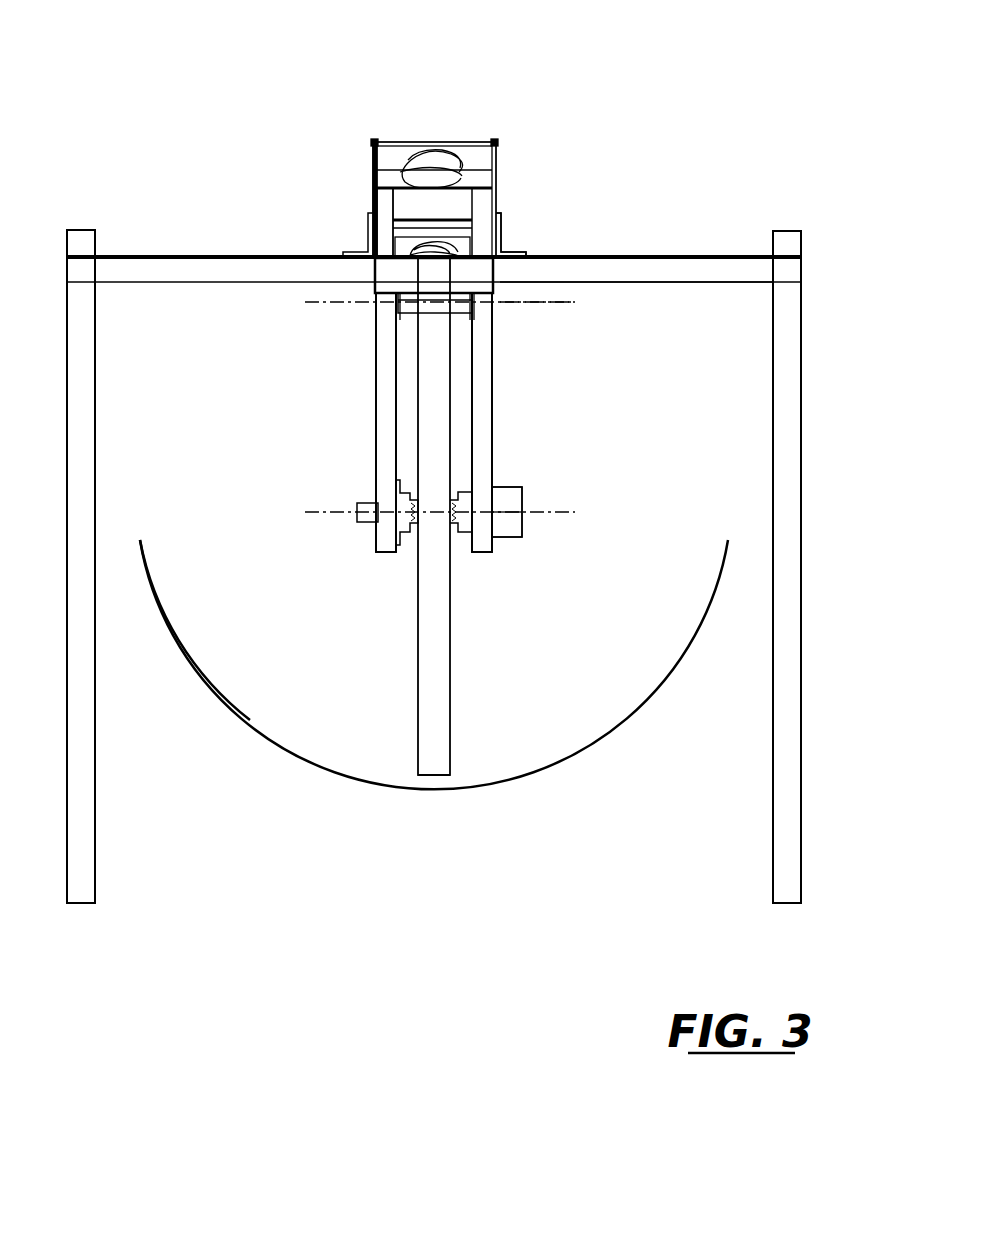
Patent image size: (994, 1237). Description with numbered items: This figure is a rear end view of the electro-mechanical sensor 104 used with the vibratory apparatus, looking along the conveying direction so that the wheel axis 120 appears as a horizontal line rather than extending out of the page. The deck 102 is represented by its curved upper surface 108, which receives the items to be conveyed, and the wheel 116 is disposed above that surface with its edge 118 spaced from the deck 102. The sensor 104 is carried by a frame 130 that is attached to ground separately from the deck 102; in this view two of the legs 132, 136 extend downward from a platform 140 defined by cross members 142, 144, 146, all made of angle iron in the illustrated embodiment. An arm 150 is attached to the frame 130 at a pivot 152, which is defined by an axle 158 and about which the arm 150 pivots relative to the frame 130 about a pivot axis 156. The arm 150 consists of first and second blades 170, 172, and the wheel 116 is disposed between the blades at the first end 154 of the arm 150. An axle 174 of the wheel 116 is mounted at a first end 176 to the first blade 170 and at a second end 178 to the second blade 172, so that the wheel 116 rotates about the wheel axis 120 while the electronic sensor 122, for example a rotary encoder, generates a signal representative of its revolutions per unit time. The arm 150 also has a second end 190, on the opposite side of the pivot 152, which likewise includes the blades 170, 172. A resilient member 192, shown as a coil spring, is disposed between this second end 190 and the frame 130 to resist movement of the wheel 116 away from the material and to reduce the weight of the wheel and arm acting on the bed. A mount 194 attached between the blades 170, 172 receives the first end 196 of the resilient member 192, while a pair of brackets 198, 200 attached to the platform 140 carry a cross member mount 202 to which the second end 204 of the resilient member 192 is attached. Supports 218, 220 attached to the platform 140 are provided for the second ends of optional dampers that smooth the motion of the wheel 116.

The deck 102 is at (650, 718).
The electro-mechanical sensor 104 is at (486, 55).
The upper surface 108 is at (200, 668).
The wheel 116 is at (450, 672).
The edge 118 is at (440, 792).
The wheel axis 120 is at (560, 510).
The electronic sensor 122 is at (505, 490).
The frame 130 is at (792, 210).
The leg 132 is at (773, 868).
The leg 136 is at (95, 872).
The platform 140 is at (275, 255).
The cross member 142 is at (762, 232).
The cross member 144 is at (143, 252).
The cross member 146 is at (640, 283).
The arm 150 is at (498, 355).
The pivot 152 is at (358, 318).
The first end 154 is at (334, 472).
The pivot axis 156 is at (575, 318).
The axle 158 is at (405, 318).
The first blade 170 is at (492, 418).
The second blade 172 is at (376, 418).
The axle 174 is at (405, 535).
The first end 176 is at (502, 536).
The second end 178 is at (368, 522).
The second end 190 is at (372, 222).
The resilient member 192 is at (405, 170).
The mount 194 is at (372, 270).
The first end 196 is at (500, 233).
The bracket 198 is at (502, 200).
The bracket 200 is at (372, 205).
The cross member mount 202 is at (491, 142).
The second end 204 is at (432, 152).
The support 218 is at (503, 256).
The support 220 is at (365, 250).